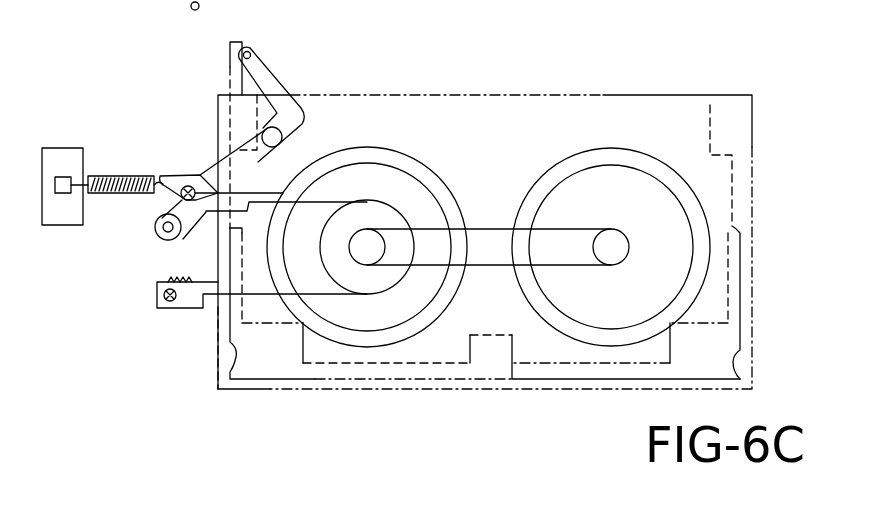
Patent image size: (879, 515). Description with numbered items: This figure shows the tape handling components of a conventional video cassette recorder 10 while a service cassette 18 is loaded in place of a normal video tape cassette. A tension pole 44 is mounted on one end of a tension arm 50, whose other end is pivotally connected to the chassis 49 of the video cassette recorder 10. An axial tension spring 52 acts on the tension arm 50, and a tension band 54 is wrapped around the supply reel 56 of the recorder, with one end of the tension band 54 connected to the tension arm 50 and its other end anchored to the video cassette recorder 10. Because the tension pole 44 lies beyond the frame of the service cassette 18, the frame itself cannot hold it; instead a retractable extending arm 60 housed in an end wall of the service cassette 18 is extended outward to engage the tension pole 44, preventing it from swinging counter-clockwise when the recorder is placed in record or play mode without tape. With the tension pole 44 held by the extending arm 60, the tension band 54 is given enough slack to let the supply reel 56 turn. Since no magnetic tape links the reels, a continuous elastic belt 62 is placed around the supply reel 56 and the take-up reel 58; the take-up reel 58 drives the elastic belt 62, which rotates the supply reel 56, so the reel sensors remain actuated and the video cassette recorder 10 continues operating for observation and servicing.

The video cassette recorder 10 is at (184, 334).
The service cassette 18 is at (253, 383).
The tension pole 44 is at (251, 51).
The chassis 49 is at (57, 152).
The tension arm 50 is at (284, 90).
The axial tension spring 52 is at (115, 197).
The tension band 54 is at (323, 200).
The supply reel 56 is at (375, 207).
The take-up reel 58 is at (612, 230).
The retractable extending arm 60 is at (227, 67).
The continuous elastic belt 62 is at (480, 228).